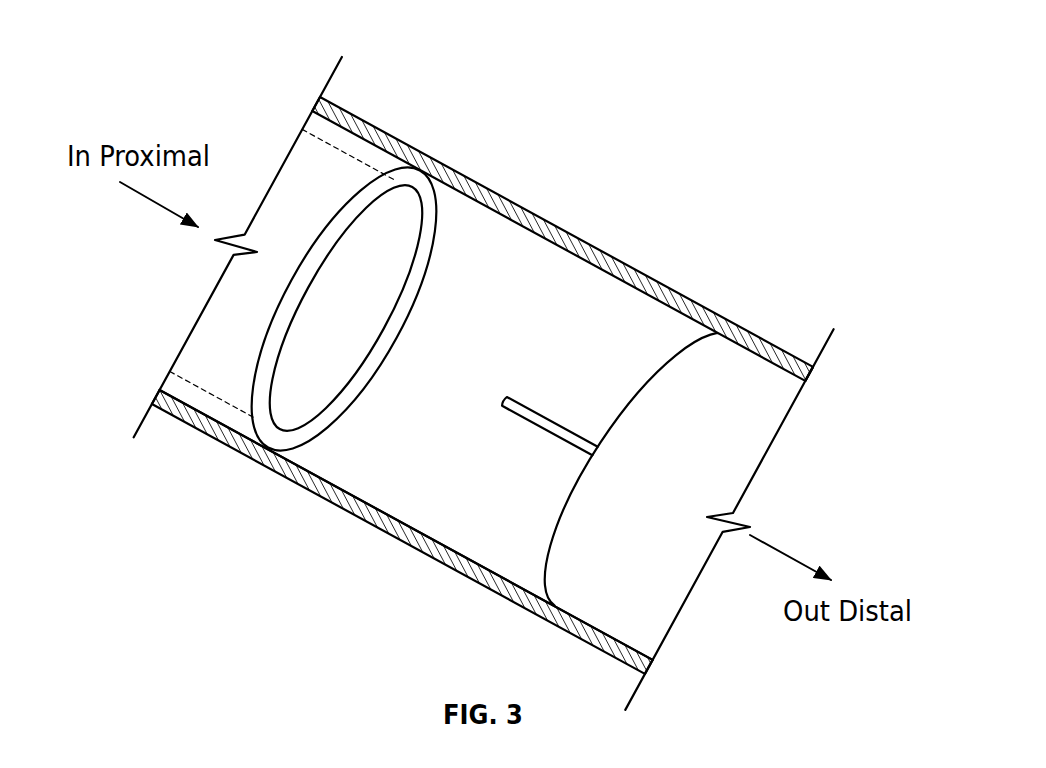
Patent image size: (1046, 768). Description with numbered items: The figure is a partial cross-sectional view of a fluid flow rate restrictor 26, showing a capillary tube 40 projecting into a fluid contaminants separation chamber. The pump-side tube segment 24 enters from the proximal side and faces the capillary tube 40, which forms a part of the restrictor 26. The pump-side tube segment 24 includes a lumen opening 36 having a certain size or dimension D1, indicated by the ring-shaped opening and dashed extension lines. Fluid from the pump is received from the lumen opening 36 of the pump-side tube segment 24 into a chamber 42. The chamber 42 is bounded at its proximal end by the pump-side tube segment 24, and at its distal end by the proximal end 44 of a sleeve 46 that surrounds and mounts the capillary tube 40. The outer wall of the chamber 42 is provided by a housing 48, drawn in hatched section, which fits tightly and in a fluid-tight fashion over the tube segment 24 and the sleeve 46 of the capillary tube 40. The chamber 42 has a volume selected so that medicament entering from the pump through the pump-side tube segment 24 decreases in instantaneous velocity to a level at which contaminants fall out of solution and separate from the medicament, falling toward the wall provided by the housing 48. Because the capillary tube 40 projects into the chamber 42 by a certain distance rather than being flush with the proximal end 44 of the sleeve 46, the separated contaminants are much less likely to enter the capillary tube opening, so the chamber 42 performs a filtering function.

The fluid flow rate restrictor 26 is at (210, 44).
The pump-side tube segment 24 is at (338, 138).
The lumen opening 36 is at (426, 189).
The capillary tube 40 is at (537, 415).
The chamber 42 is at (373, 490).
The proximal end of sleeve 44 is at (672, 347).
The sleeve 46 is at (742, 363).
The housing 48 is at (442, 565).
The dimension of lumen opening D1 is at (352, 302).